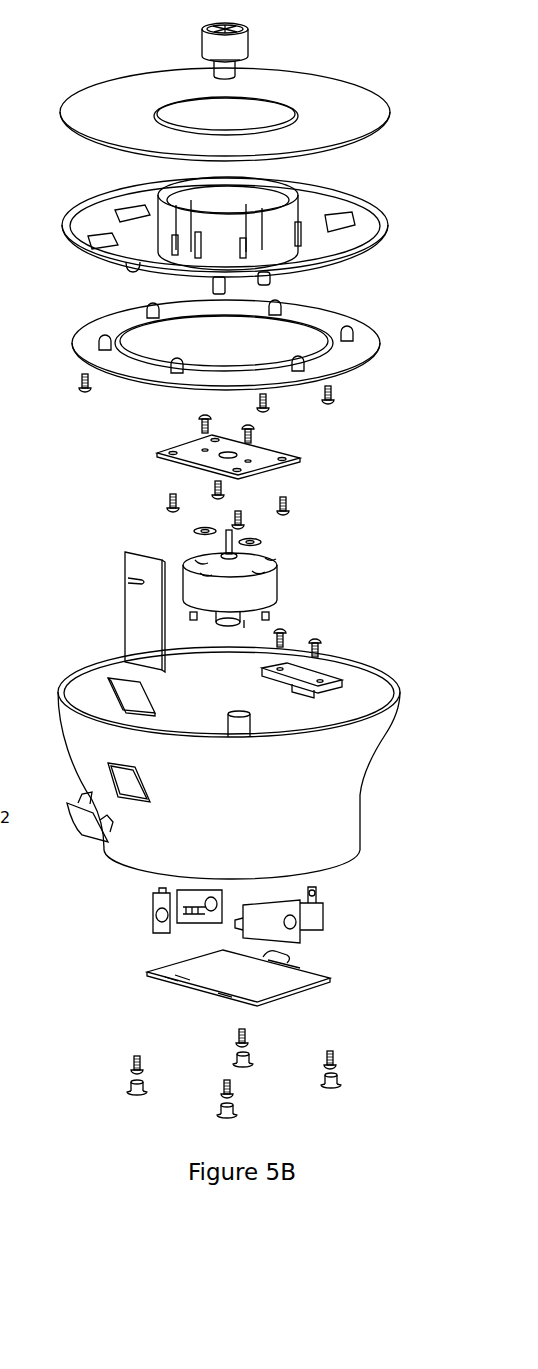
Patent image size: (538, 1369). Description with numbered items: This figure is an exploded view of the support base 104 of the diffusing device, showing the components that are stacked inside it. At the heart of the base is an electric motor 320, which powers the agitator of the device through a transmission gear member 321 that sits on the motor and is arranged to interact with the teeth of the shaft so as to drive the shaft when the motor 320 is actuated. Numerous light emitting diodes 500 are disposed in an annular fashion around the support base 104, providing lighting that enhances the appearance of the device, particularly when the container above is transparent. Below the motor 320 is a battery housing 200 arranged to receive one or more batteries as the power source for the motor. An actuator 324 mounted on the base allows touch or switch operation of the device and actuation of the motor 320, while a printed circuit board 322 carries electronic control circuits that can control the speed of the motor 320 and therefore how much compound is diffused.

The transmission gear member 321 is at (185, 42).
The light emitting diodes 500 is at (82, 309).
The electric motor 320 is at (178, 540).
The printed circuit board 322 is at (136, 618).
The support base 104 is at (65, 660).
The actuator 324 is at (70, 850).
The battery housing 200 is at (128, 980).